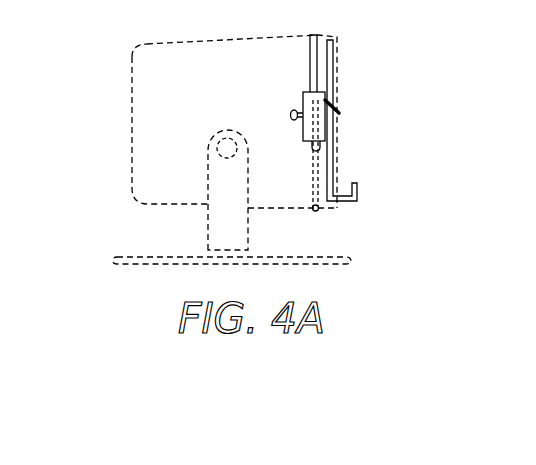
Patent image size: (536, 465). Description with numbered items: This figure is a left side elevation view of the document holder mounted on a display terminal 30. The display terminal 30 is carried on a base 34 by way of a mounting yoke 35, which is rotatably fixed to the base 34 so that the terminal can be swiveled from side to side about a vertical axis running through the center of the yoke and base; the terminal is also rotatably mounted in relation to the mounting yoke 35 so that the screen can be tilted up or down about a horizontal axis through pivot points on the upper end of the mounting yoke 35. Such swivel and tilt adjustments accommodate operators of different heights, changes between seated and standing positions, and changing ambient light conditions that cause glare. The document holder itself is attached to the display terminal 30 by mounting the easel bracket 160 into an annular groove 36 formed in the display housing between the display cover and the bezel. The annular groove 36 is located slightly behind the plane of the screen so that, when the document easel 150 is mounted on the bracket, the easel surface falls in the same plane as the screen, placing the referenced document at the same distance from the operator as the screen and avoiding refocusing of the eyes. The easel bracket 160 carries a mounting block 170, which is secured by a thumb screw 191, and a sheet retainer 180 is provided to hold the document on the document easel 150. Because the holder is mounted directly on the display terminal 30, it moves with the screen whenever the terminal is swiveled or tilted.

The display terminal 30 is at (338, 71).
The base 34 is at (346, 261).
The mounting yoke 35 is at (212, 134).
The annular groove 36 is at (312, 176).
The document easel 150 is at (334, 83).
The easel bracket 160 is at (313, 34).
The mounting block 170 is at (303, 140).
The sheet retainer 180 is at (340, 113).
The thumb screw 191 is at (292, 112).